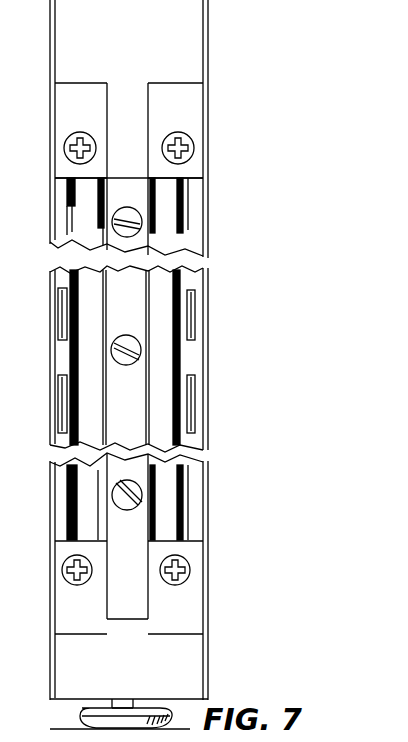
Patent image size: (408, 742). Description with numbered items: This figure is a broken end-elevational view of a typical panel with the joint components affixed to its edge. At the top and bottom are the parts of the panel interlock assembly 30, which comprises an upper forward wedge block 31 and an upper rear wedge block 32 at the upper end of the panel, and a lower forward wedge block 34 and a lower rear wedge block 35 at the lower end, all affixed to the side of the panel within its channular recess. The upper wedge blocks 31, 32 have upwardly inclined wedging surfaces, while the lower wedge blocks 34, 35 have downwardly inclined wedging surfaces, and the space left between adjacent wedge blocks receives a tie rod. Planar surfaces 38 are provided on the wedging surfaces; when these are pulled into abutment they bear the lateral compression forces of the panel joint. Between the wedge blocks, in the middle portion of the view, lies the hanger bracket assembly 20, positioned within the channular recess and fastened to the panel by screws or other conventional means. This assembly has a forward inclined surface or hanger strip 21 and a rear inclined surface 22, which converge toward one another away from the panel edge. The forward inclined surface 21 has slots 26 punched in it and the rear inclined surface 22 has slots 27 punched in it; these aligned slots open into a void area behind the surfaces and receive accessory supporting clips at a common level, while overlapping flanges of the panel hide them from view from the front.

The panel interlock assembly 30 is at (210, 90).
The hanger bracket assembly 20 is at (188, 207).
The upper forward wedge block 31 is at (70, 84).
The upper rear wedge block 32 is at (168, 85).
The planar surfaces 38 is at (83, 112).
The forward inclined surface or hanger strip 21 is at (62, 342).
The rear inclined surface 22 is at (190, 352).
The slots 26 is at (60, 405).
The slots 27 is at (190, 400).
The lower forward wedge block 34 is at (77, 634).
The lower rear wedge block 35 is at (172, 634).